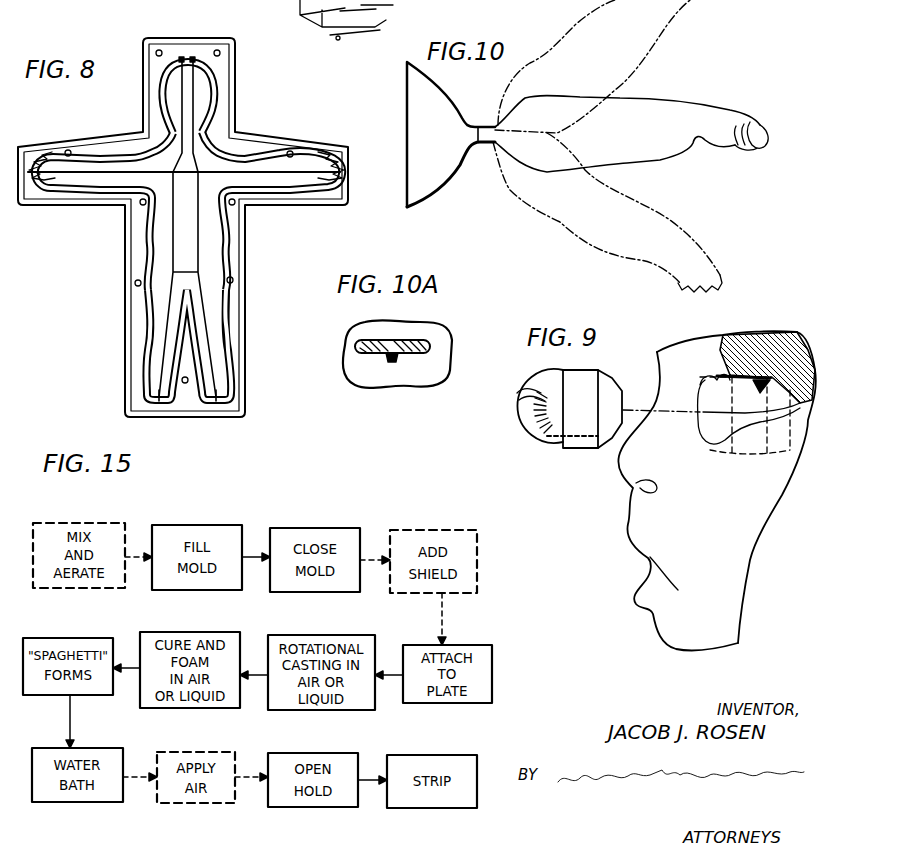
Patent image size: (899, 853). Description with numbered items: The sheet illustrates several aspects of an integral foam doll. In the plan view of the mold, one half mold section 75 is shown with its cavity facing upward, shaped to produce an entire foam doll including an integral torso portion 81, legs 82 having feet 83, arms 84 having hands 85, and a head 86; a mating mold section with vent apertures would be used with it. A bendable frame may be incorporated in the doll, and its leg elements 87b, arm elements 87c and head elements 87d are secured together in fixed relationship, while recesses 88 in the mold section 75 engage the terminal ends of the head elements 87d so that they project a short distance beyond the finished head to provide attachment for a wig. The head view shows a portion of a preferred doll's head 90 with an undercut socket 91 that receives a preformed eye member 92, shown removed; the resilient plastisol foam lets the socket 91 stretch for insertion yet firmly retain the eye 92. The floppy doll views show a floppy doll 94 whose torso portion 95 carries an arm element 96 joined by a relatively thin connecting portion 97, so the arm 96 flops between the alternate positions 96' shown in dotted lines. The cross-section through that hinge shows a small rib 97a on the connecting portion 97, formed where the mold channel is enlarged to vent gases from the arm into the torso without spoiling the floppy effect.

In FIG. 8, the mold section 75 is at (137, 301).
In FIG. 8, the torso portion 81 is at (214, 257).
In FIG. 8, the legs 82 is at (153, 323).
In FIG. 8, the feet 83 is at (213, 398).
In FIG. 8, the arms 84 is at (97, 166).
In FIG. 8, the hands 85 is at (47, 158).
In FIG. 8, the head 86 is at (205, 112).
In FIG. 8, the leg elements 87b is at (162, 354).
In FIG. 8, the arm elements 87c is at (73, 176).
In FIG. 8, the head elements 87d is at (194, 98).
In FIG. 8, the recesses 88 is at (193, 57).
In FIG. 9, the doll's head 90 is at (740, 562).
In FIG. 9, the undercut socket 91 is at (763, 340).
In FIG. 9, the eye member 92 is at (580, 449).
In FIG. 10, the floppy doll 94 is at (441, 199).
In FIG. 10, the torso portion 95 is at (410, 87).
In FIG. 10A, the torso portion 95 is at (428, 328).
In FIG. 10, the arm element 96 is at (631, 127).
In FIG. 10, the alternate positions 96' is at (628, 146).
In FIG. 10, the connecting portion 97 is at (478, 130).
In FIG. 10A, the connecting portion 97 is at (431, 347).
In FIG. 10A, the rib 97a is at (392, 363).